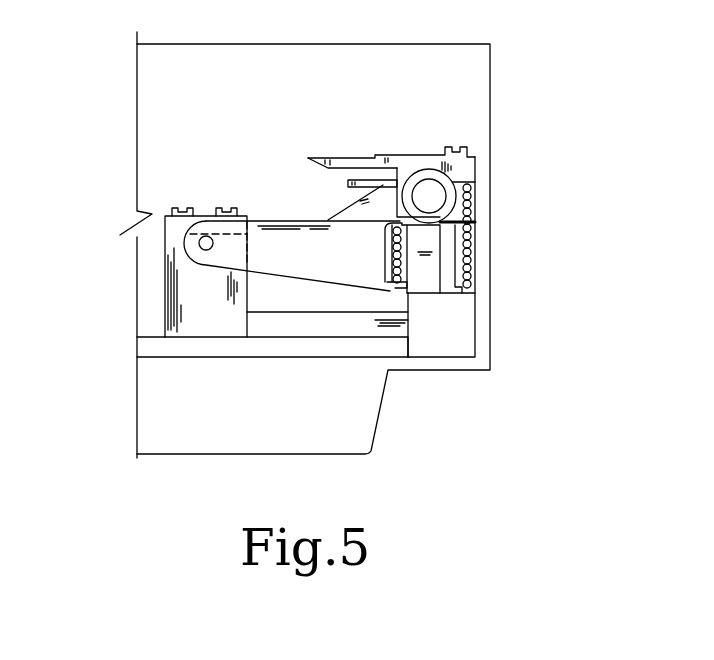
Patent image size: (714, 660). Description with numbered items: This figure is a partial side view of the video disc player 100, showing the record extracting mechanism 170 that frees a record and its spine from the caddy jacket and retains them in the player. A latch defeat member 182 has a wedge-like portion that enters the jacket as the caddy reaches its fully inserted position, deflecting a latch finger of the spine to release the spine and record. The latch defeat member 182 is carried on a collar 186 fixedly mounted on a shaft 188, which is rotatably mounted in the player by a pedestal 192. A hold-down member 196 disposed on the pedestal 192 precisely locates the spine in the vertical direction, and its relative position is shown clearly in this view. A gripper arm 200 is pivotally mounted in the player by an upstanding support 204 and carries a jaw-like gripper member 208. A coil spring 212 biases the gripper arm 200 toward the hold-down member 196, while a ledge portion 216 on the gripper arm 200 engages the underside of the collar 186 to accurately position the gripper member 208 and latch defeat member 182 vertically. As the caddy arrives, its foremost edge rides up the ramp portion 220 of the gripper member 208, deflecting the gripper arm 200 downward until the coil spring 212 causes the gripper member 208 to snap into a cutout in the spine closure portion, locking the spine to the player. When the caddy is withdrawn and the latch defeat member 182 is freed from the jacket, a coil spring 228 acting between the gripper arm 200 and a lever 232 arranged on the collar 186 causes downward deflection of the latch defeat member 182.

The video disc player 100 is at (96, 391).
The record extracting mechanism 170 is at (470, 100).
The latch defeat member 182 is at (348, 183).
The collar 186 is at (428, 174).
The shaft 188 is at (421, 186).
The pedestal 192 is at (477, 198).
The hold-down member 196 is at (323, 157).
The gripper arm 200 is at (256, 220).
The upstanding support 204 is at (170, 289).
The gripper member 208 is at (349, 219).
The coil spring 212 is at (475, 243).
The ledge portion 216 is at (435, 269).
The ramp portion 220 is at (337, 220).
The coil spring 228 is at (395, 240).
The lever 232 is at (375, 224).